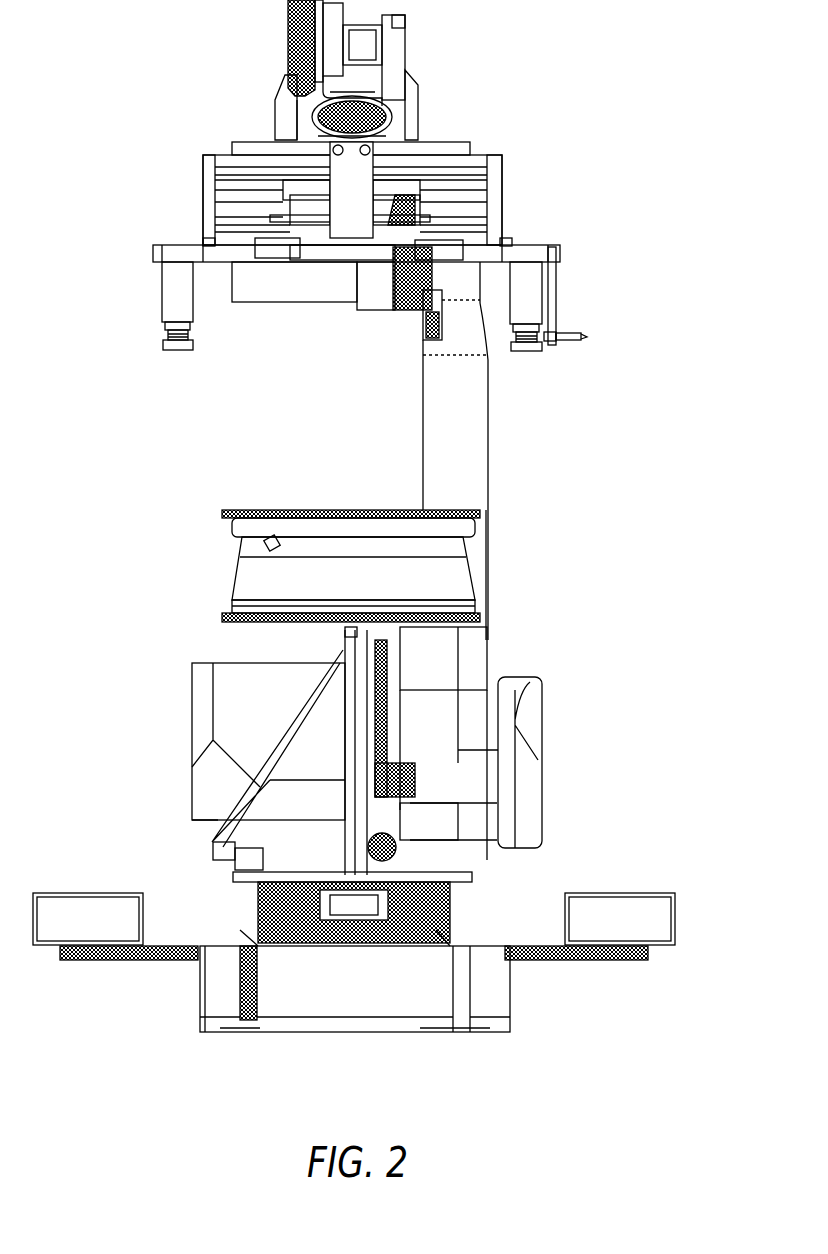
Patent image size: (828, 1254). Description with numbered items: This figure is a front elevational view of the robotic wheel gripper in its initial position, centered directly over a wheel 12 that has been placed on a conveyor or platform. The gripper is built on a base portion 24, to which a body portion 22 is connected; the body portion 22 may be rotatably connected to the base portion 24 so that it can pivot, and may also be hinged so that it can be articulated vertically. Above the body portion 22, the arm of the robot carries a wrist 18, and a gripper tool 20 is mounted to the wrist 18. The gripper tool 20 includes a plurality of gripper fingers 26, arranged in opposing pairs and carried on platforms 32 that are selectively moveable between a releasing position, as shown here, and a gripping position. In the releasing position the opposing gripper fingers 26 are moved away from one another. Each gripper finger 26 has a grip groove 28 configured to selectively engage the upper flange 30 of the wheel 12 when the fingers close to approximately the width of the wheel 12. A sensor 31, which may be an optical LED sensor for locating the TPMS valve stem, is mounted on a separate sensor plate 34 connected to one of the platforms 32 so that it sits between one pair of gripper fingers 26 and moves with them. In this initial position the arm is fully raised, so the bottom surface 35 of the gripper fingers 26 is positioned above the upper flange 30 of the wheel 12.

The wheel 12 is at (286, 542).
The wrist 18 is at (281, 41).
The gripper tool 20 is at (441, 116).
The body portion 22 is at (468, 478).
The base portion 24 is at (586, 861).
The gripper finger 26 is at (175, 300).
The grip groove 28 is at (192, 338).
The upper flange 30 is at (229, 512).
The sensor 31 is at (564, 345).
The platform 32 is at (162, 245).
The sensor plate 34 is at (558, 320).
The bottom surface 35 is at (172, 351).